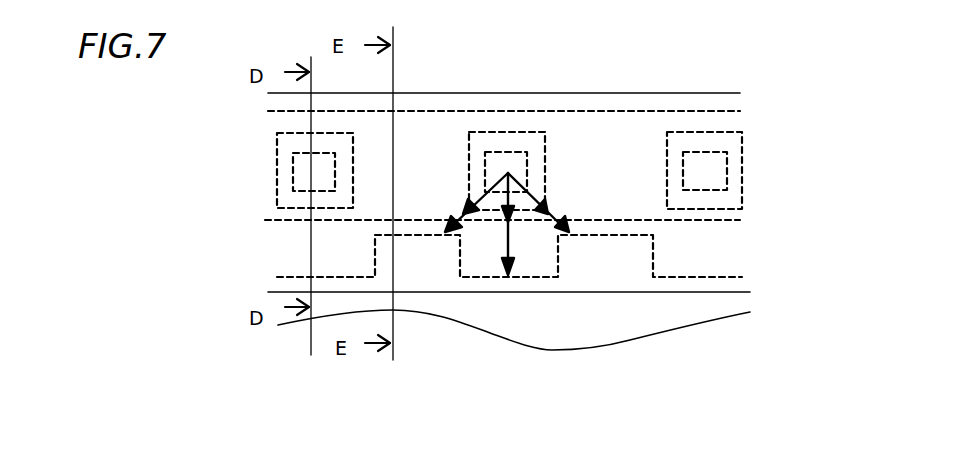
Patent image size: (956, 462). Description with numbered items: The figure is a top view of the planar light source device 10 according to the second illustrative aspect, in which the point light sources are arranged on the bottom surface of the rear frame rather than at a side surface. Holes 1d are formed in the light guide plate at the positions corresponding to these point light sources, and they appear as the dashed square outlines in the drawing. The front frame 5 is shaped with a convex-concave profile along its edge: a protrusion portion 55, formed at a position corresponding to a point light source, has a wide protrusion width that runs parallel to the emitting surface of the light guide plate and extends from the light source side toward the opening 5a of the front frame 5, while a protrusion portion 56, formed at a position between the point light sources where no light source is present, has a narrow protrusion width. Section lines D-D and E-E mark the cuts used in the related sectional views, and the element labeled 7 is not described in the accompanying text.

The edge portion 7 is at (405, 143).
The front frame 5 is at (462, 117).
The holes 1d is at (507, 137).
The protrusion portion 56 is at (616, 226).
The protrusion portion 55 is at (676, 244).
The planar light source device 10 is at (450, 340).
The opening 5a is at (648, 317).